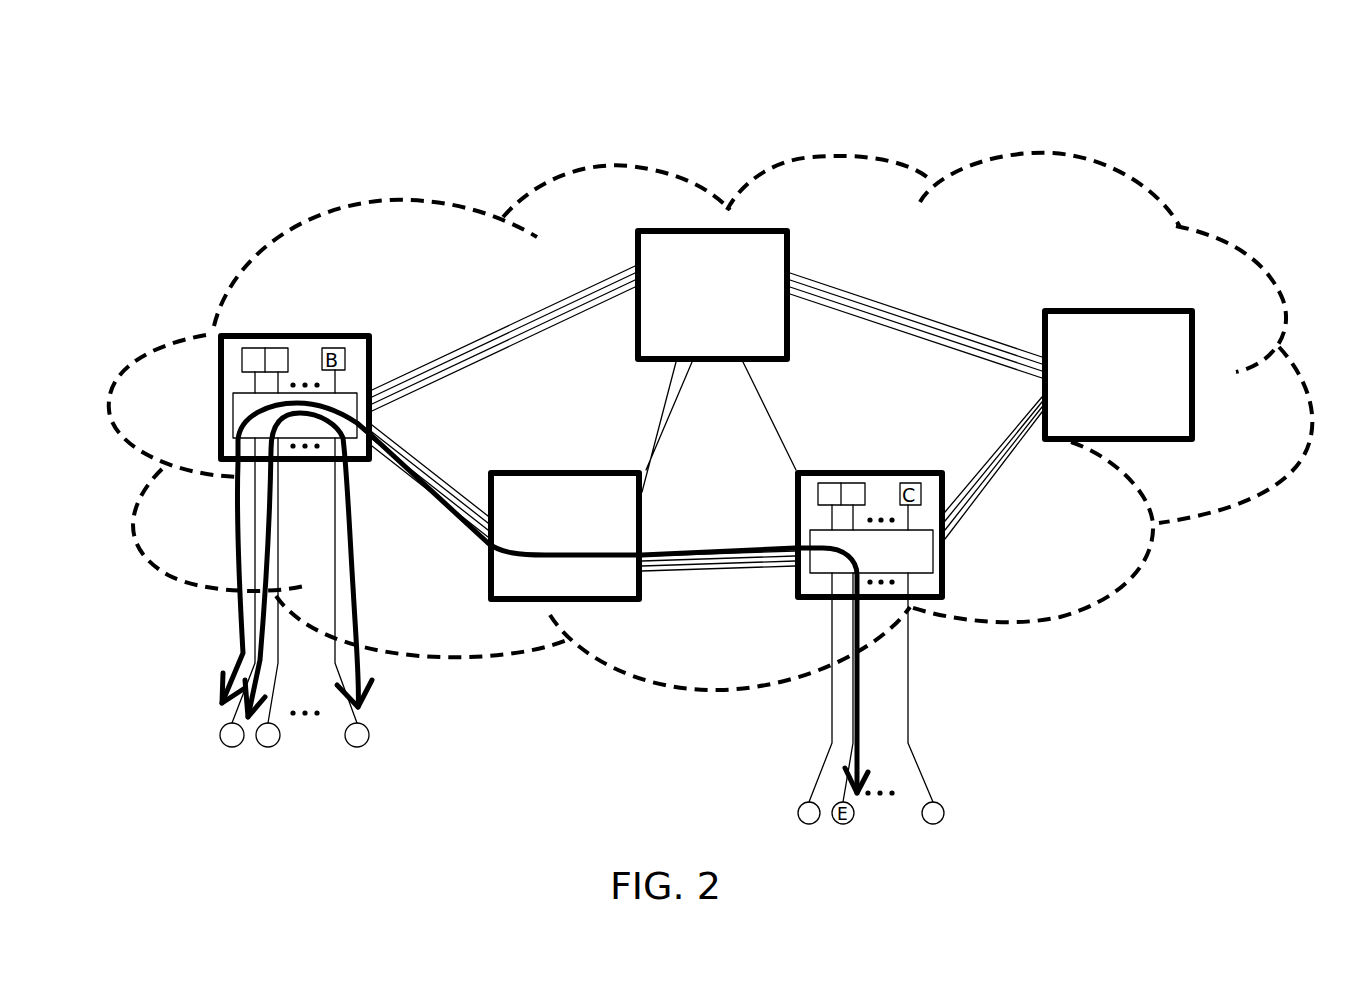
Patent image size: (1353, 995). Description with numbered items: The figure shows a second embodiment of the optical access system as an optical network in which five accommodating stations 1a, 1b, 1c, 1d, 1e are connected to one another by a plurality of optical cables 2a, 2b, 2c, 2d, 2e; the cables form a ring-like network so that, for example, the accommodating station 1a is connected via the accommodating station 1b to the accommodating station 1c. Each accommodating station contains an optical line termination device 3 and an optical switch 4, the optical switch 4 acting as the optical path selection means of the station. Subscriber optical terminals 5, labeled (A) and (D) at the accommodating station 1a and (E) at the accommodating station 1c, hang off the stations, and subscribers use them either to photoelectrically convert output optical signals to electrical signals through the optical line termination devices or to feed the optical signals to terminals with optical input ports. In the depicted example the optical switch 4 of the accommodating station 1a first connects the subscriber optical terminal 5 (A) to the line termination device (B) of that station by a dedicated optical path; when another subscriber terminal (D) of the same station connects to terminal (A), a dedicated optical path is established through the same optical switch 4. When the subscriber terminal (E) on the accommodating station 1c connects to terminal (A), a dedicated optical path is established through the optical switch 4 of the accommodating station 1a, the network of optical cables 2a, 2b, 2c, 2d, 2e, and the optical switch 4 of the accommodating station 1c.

The accommodating station 1a is at (275, 333).
The accommodating station 1b is at (542, 470).
The accommodating station 1c is at (852, 470).
The accommodating station 1d is at (1100, 308).
The accommodating station 1e is at (677, 228).
The optical cable 2a is at (430, 481).
The optical cable 2b is at (718, 580).
The optical cable 2c is at (993, 468).
The optical cable 2d is at (916, 321).
The optical cable 2e is at (503, 338).
The optical line termination device 3 is at (241, 362).
The optical switch 4 is at (245, 415).
The subscriber optical terminal 5 is at (370, 735).